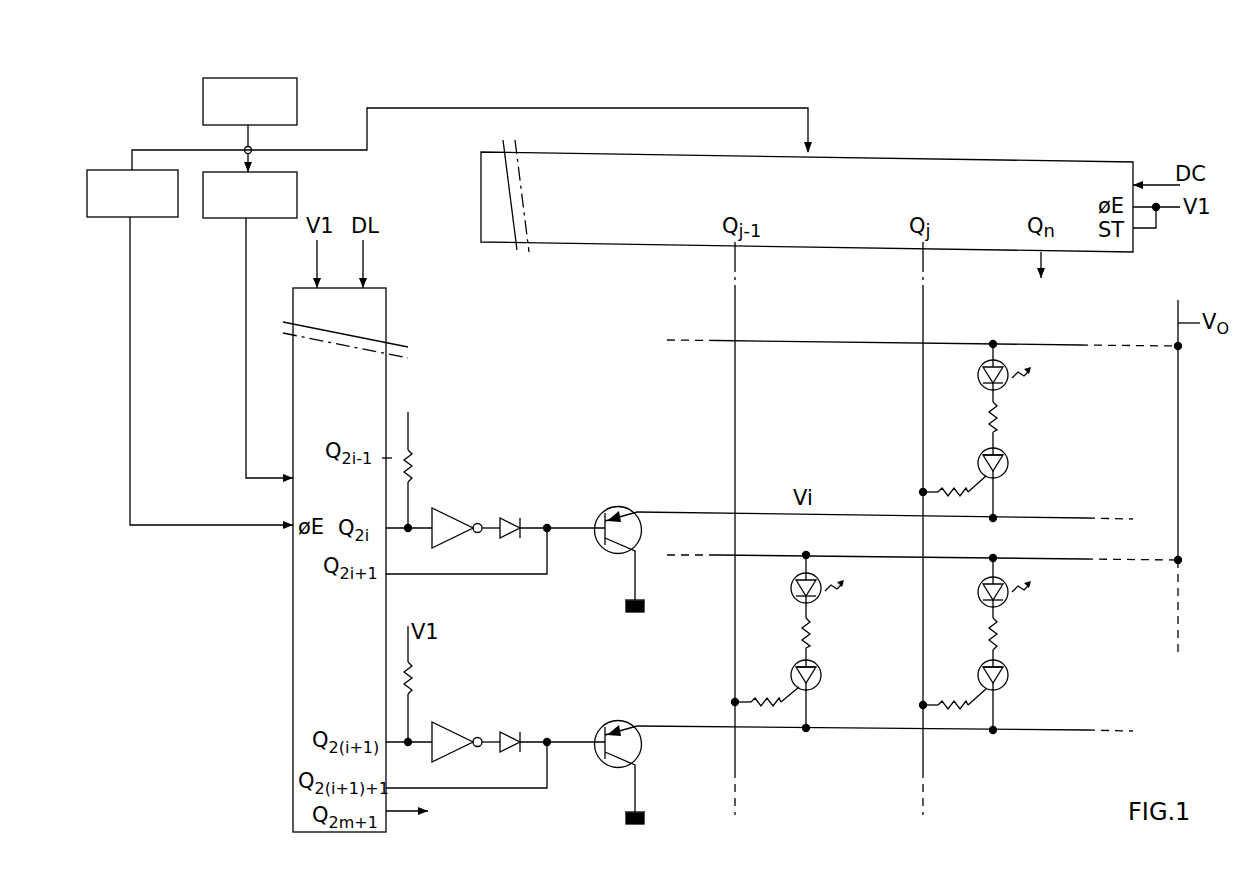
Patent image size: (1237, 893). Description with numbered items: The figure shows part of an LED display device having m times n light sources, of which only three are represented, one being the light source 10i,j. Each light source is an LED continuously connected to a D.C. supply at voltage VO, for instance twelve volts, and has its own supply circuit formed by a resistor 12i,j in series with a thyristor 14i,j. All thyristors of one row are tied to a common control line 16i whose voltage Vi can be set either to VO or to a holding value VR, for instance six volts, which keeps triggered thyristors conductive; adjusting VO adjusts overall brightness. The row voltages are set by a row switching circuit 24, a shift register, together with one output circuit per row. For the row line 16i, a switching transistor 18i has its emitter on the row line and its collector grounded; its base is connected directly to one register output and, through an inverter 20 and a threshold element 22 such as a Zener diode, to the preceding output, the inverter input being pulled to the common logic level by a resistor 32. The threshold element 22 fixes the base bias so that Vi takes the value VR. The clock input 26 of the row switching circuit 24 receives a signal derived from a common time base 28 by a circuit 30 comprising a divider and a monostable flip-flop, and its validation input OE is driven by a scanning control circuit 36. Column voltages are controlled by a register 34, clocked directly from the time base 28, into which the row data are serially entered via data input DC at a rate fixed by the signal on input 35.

The common time base 28 is at (297, 95).
The circuit comprising a divider and a monostable flip-flop 30 is at (297, 197).
The scanning control circuit 36 is at (108, 170).
The input of register 34 35 is at (811, 136).
The column register circuit 34 is at (947, 158).
The row switching circuit 24 is at (386, 378).
The clock input 26 is at (268, 478).
The resistor 32 is at (414, 462).
The inverter 20 is at (449, 505).
The threshold element 22 is at (511, 516).
The switching transistor 18i is at (617, 506).
The light source 10i,j is at (1006, 383).
The resistor 12i,j is at (1000, 422).
The thyristor 14i,j is at (1008, 460).
The common control line 16i is at (1053, 518).